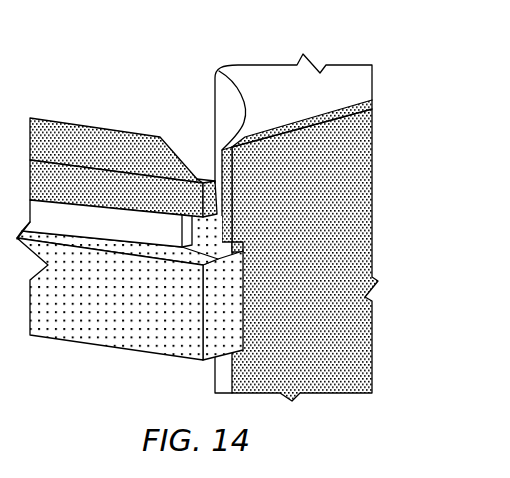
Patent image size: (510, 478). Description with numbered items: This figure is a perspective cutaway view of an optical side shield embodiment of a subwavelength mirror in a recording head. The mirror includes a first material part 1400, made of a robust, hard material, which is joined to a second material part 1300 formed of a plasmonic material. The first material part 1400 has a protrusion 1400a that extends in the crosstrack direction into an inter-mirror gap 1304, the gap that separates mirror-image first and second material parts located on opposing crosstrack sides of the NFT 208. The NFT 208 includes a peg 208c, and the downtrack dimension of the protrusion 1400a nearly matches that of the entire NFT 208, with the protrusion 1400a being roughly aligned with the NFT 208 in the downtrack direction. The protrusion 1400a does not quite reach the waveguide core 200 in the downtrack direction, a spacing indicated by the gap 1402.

The waveguide core 200 is at (88, 345).
The NFT 208 is at (117, 160).
The NFT peg 208c is at (180, 217).
The second material part 1300 is at (227, 70).
The inter-mirror gap 1304 is at (207, 246).
The first material part 1400 is at (360, 172).
The protrusion 1400a is at (214, 138).
The gap 1402 is at (243, 250).